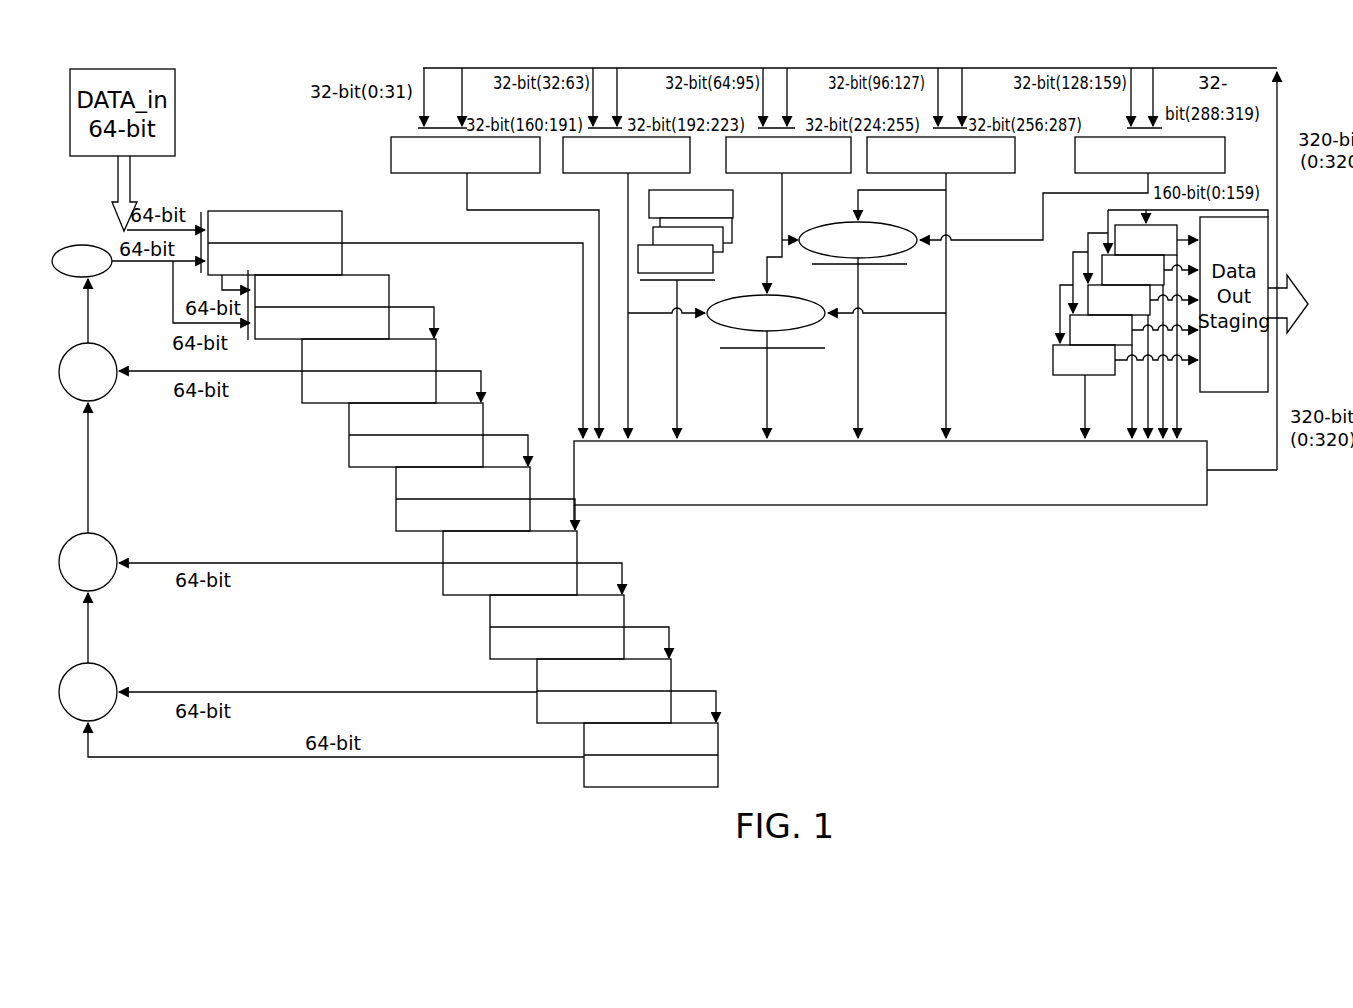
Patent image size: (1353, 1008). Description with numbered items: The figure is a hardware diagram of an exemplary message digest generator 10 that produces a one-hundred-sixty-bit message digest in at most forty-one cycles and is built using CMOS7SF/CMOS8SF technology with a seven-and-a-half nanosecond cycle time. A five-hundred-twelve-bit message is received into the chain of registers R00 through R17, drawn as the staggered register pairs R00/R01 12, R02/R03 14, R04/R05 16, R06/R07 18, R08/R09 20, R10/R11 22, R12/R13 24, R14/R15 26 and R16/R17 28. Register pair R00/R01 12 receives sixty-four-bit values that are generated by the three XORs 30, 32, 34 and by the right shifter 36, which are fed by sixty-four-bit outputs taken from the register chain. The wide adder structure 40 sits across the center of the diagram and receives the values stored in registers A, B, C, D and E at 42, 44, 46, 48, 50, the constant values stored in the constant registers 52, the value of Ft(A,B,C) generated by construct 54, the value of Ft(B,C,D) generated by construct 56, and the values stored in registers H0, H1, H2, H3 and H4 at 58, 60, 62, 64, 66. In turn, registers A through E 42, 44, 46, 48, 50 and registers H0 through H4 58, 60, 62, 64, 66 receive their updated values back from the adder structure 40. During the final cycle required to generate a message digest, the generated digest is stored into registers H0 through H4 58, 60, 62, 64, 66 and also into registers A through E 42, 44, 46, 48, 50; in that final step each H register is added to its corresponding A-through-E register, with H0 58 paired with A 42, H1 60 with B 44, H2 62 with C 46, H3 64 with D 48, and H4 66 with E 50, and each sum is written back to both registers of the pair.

The message digest generator 10 is at (897, 644).
The register R00/R01 12 is at (342, 245).
The register R02/R03 14 is at (389, 300).
The register R04/R05 16 is at (436, 350).
The register R06/R07 18 is at (349, 440).
The register R08/R09 20 is at (396, 505).
The register R10/R11 22 is at (443, 572).
The register R12/R13 24 is at (490, 632).
The register R14/R15 26 is at (537, 700).
The register R16/R17 28 is at (584, 763).
The XOR 30 is at (108, 714).
The XOR 32 is at (110, 585).
The XOR 34 is at (112, 393).
The right shifter 36 is at (102, 277).
The adder structure 40 is at (985, 505).
The register A 42 is at (1097, 173).
The register B 44 is at (956, 173).
The register C 46 is at (795, 173).
The register D 48 is at (602, 173).
The register E 50 is at (462, 173).
The constant registers 52 is at (720, 258).
The construct Ft(A,B,C) 54 is at (910, 258).
The construct Ft(B,C,D) 56 is at (820, 328).
The register H0 58 is at (1053, 358).
The register H1 60 is at (1060, 330).
The register H2 62 is at (1073, 290).
The register H3 64 is at (1088, 257).
The register H4 66 is at (1108, 233).